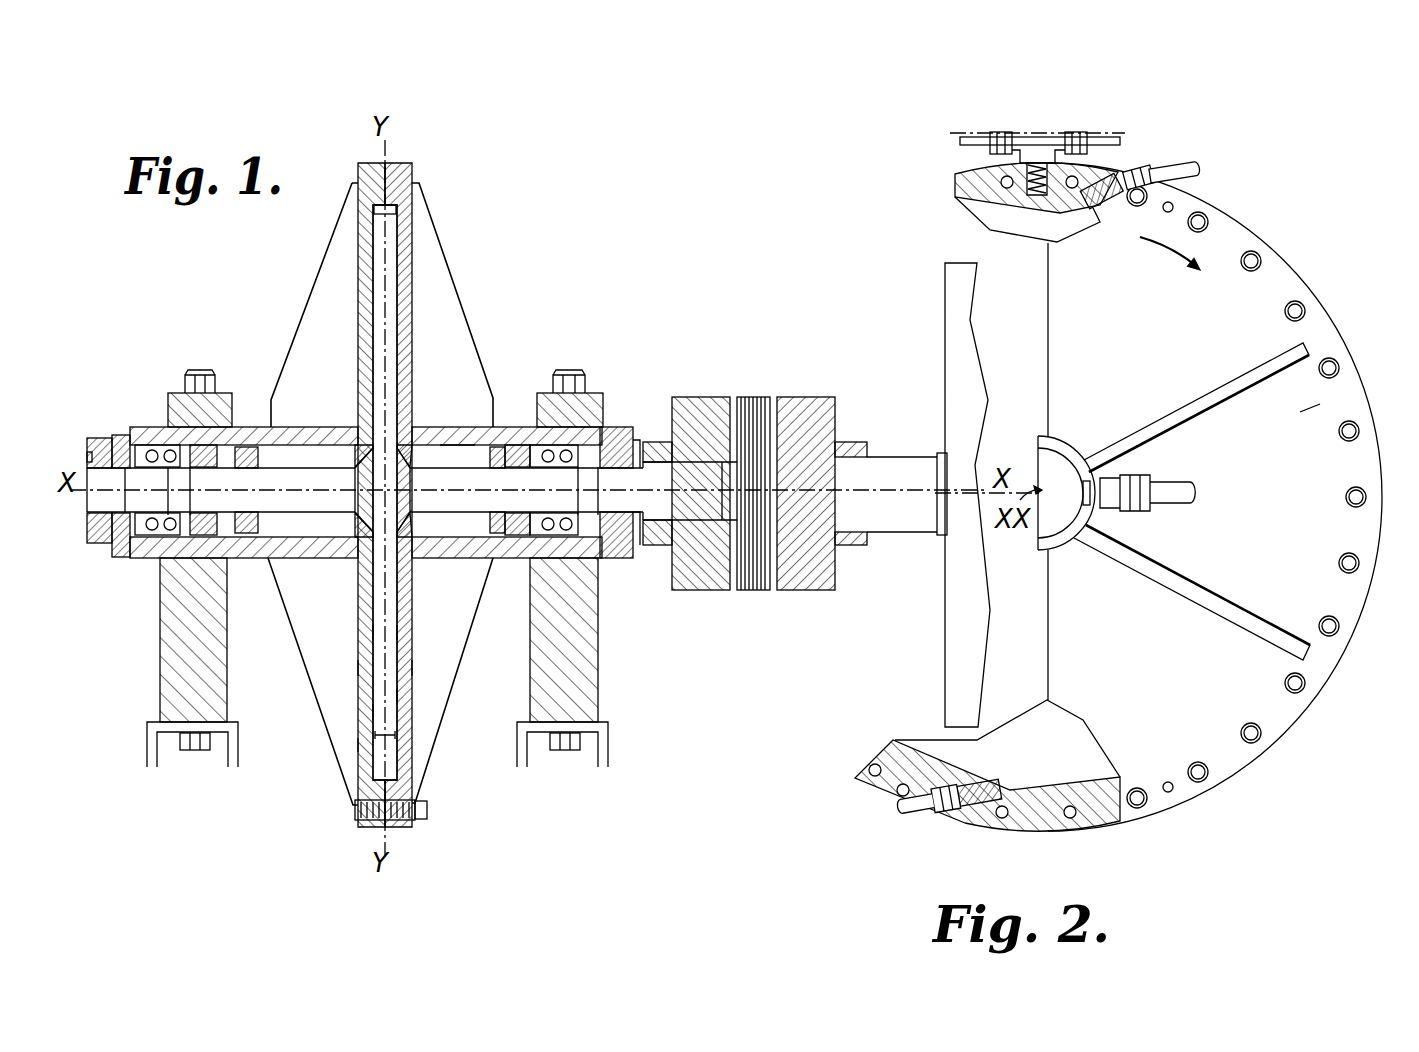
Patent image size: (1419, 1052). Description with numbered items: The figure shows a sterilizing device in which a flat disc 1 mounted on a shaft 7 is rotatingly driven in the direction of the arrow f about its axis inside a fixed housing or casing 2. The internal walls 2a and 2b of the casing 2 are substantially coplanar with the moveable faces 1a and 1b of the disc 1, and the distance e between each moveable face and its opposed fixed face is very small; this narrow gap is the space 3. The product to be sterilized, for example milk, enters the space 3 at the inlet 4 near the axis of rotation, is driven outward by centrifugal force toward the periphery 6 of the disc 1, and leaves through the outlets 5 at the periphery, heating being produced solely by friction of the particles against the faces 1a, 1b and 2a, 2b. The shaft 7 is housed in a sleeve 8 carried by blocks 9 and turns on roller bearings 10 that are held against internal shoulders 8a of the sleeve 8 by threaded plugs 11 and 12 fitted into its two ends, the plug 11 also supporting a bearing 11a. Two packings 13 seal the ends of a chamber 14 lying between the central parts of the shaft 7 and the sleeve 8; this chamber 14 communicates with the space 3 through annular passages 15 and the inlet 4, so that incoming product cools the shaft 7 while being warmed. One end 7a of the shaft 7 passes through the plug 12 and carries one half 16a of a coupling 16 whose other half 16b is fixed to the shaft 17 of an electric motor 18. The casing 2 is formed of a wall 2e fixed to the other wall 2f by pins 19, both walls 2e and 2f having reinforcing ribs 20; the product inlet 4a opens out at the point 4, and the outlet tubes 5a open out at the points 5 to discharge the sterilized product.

In FIG. 1, the flat disc 1 is at (390, 272).
In FIG. 1, the moveable face of disc 1a is at (373, 633).
In FIG. 1, the moveable face of disc 1b is at (397, 633).
In FIG. 1, the housing or casing 2 is at (403, 357).
In FIG. 2, the housing or casing 2 is at (1370, 455).
In FIG. 1, the fixed face of casing 2a is at (372, 668).
In FIG. 1, the fixed face of casing 2b is at (400, 668).
In FIG. 1, the casing wall 2e is at (400, 696).
In FIG. 2, the casing wall 2e is at (1283, 420).
In FIG. 1, the casing wall 2f is at (360, 745).
In FIG. 1, the space 3 is at (370, 712).
In FIG. 2, the inlet 4 is at (1082, 505).
In FIG. 2, the inlet 4a is at (1182, 500).
In FIG. 2, the outlets 5 is at (1082, 207).
In FIG. 2, the outlet tubes 5a is at (1176, 170).
In FIG. 1, the periphery of disc 6 is at (396, 222).
In FIG. 1, the shaft 7 is at (318, 504).
In FIG. 1, the end of shaft 7a is at (700, 514).
In FIG. 1, the sleeve 8 is at (153, 418).
In FIG. 1, the internal shoulders of sleeve 8a is at (255, 558).
In FIG. 1, the blocks 9 is at (175, 400).
In FIG. 1, the roller bearings 10 is at (205, 535).
In FIG. 1, the threaded plug 11 is at (112, 436).
In FIG. 1, the bearing 11a is at (125, 558).
In FIG. 1, the threaded plug 12 is at (628, 440).
In FIG. 1, the packings 13 is at (250, 447).
In FIG. 1, the chamber 14 is at (456, 455).
In FIG. 1, the annular passages 15 is at (403, 445).
In FIG. 1, the coupling 16 is at (752, 397).
In FIG. 1, the coupling half 16a is at (700, 397).
In FIG. 1, the coupling half 16b is at (818, 397).
In FIG. 1, the motor shaft 17 is at (876, 466).
In FIG. 2, the electric motor 18 is at (962, 320).
In FIG. 1, the pins 19 is at (418, 810).
In FIG. 2, the pins 19 is at (1250, 740).
In FIG. 1, the reinforcing ribs 20 is at (333, 275).
In FIG. 2, the reinforcing ribs 20 is at (1215, 397).
In FIG. 1, the distance e is at (404, 722).
In FIG. 2, the arrow f is at (1162, 262).